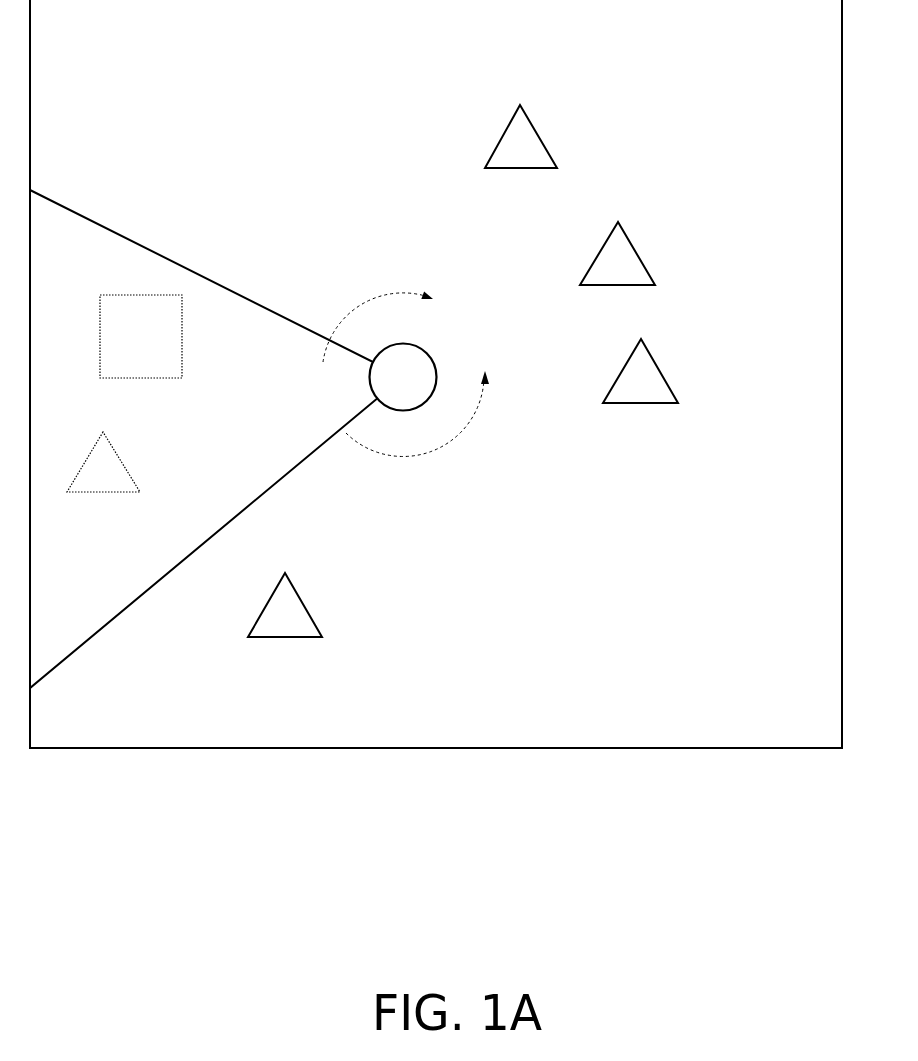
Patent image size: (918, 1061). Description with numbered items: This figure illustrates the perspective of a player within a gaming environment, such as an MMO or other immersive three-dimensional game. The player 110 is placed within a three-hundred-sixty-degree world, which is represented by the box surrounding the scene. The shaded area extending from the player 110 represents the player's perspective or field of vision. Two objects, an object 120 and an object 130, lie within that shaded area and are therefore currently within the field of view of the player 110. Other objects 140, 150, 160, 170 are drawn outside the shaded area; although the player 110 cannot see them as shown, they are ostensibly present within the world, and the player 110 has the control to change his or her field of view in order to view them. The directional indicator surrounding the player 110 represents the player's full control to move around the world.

The player 110 is at (405, 380).
The object 120 is at (127, 362).
The object 130 is at (97, 473).
The object 140 is at (285, 610).
The object 150 is at (642, 380).
The object 160 is at (623, 262).
The object 170 is at (530, 140).